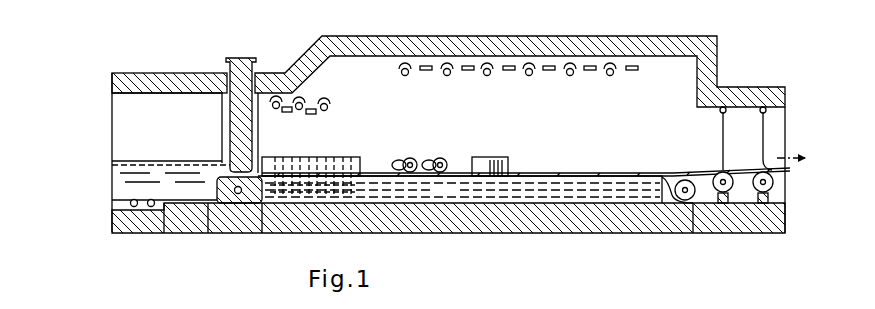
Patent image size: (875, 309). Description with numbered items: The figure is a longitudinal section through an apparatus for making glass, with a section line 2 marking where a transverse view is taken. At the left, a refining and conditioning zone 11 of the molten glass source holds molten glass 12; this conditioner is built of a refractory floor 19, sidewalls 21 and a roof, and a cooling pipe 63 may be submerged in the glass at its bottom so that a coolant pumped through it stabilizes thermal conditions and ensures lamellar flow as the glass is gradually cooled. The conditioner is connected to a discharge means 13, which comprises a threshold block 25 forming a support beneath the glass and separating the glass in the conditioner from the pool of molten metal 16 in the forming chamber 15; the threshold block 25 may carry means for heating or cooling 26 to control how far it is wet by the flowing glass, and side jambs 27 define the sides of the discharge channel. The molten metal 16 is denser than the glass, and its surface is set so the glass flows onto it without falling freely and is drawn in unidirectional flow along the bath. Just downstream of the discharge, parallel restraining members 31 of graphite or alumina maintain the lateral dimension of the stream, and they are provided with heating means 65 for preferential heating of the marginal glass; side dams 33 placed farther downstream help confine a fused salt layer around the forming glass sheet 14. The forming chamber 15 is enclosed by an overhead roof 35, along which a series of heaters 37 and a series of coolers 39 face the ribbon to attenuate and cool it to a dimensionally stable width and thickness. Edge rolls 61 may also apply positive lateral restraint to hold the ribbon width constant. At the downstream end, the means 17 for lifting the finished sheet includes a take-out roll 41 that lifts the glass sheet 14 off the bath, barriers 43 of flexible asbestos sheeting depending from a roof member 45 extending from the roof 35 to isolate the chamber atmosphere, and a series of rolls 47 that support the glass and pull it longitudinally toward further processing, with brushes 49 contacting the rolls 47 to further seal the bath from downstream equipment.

The section line 2- 2 is at (130, 127).
The refining and conditioning zone 11 is at (165, 66).
The molten glass 12 is at (120, 189).
The discharge means 13 is at (256, 54).
The glass sheet 14 is at (563, 171).
The forming chamber 15 is at (398, 32).
The pool of molten metal 16 is at (435, 199).
The means for lifting a finished continuous sheet of glass 17 is at (805, 98).
The refractory floor 19 is at (125, 230).
The sidewalls 21 is at (158, 117).
The threshold block 25 is at (238, 200).
The means for heating or cooling 26 is at (242, 194).
The side jambs 27 is at (226, 121).
The restraining members 31 is at (358, 157).
The side dams 33 is at (498, 157).
The overhead roof 35 is at (652, 46).
The heaters 37 is at (447, 76).
The coolers 39 is at (509, 73).
The take-out roll 41 is at (682, 178).
The barriers 43 is at (762, 138).
The roof member 45 is at (738, 100).
The rolls 47 is at (724, 172).
The brushes 49 is at (757, 197).
The edge rolls 61 is at (413, 158).
The cooling pipe 63 is at (128, 204).
The heating means 65 is at (298, 164).